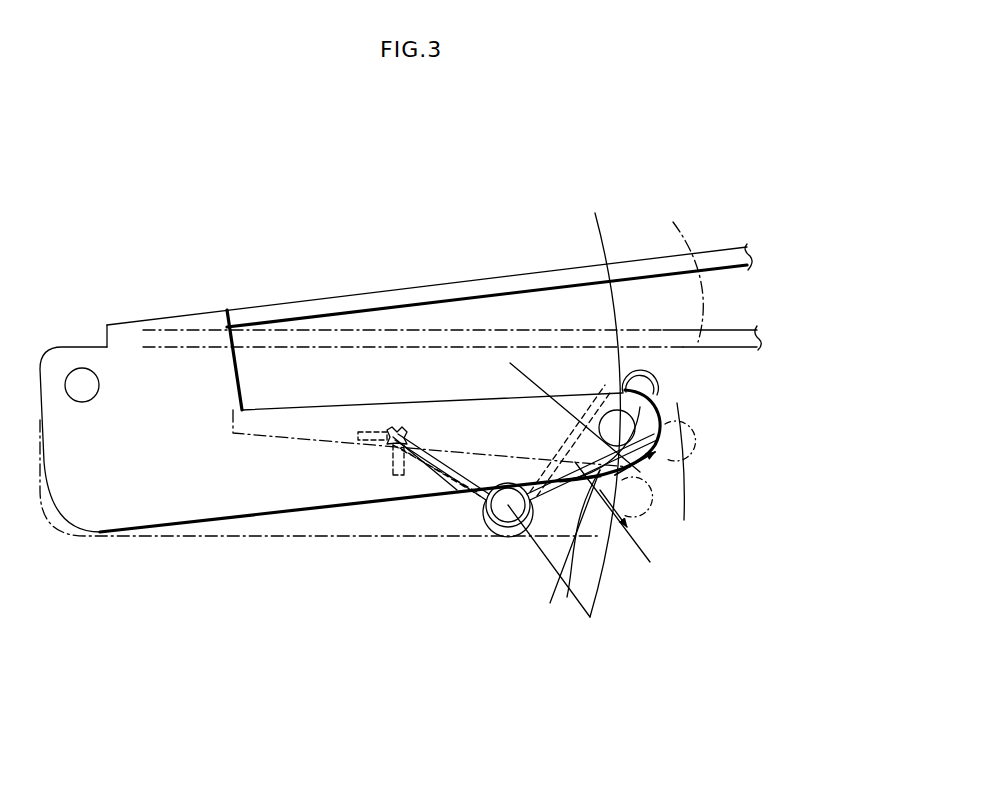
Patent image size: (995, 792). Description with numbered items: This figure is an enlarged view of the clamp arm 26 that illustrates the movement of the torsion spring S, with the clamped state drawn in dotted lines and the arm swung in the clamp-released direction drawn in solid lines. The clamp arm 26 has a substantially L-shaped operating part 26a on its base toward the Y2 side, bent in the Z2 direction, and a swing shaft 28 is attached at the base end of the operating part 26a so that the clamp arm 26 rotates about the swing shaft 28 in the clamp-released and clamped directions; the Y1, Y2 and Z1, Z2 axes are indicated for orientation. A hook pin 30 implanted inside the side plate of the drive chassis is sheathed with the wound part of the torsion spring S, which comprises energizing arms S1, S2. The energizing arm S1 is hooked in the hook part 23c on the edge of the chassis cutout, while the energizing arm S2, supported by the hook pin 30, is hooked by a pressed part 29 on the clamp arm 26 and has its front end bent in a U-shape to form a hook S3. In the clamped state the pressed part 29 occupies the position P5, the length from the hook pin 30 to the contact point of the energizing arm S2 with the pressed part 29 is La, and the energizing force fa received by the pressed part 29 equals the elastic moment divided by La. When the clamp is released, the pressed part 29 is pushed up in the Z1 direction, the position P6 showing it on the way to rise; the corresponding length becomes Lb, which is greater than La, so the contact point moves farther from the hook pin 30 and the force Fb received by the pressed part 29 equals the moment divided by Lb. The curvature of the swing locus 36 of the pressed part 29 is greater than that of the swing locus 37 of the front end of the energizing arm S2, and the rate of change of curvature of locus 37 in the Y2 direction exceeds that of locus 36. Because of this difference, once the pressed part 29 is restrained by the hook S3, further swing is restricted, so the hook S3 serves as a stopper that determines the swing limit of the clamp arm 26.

The clamp arm 26 is at (663, 260).
The operating part 26a is at (272, 492).
The swing shaft 28 is at (85, 383).
The pressed part 29 is at (663, 402).
The hook pin 30 is at (490, 530).
The swing locus of the pressed part 36 is at (594, 233).
The swing locus of the energizing arm front end 37 is at (620, 373).
The hook part 23c is at (397, 447).
The torsion spring S is at (497, 530).
The energizing arm S1 is at (460, 500).
The energizing arm S2 is at (540, 540).
The hook S3 is at (662, 372).
The position of the pressed part in the clamped state P5 is at (640, 490).
The position of the pressed part on the way to rise P6 is at (618, 440).
The length La is at (645, 566).
The length Lb is at (515, 367).
The energizing force fb Fb is at (660, 458).
The energizing force fa is at (566, 551).
The Z1 direction Z1 is at (898, 493).
The Z2 direction Z2 is at (899, 519).
The Y1 direction Y1 is at (666, 665).
The Y2 direction Y2 is at (648, 664).